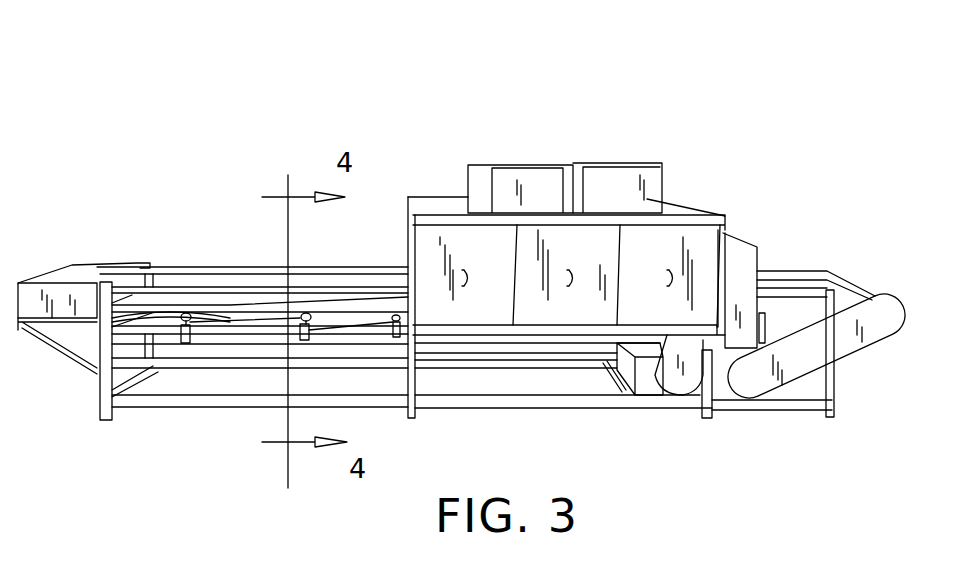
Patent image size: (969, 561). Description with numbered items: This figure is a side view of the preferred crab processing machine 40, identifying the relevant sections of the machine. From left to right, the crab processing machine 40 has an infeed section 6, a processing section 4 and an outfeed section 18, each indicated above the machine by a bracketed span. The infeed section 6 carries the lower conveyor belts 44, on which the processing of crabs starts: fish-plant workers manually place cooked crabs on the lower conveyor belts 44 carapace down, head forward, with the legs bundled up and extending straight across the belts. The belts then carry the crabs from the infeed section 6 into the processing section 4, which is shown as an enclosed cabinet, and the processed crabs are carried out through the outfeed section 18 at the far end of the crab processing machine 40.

The infeed section 6 is at (400, 108).
The processing section 4 is at (697, 108).
The outfeed section 18 is at (715, 108).
The lower conveyor belts 44 is at (230, 267).
The crab processing machine 40 is at (753, 197).